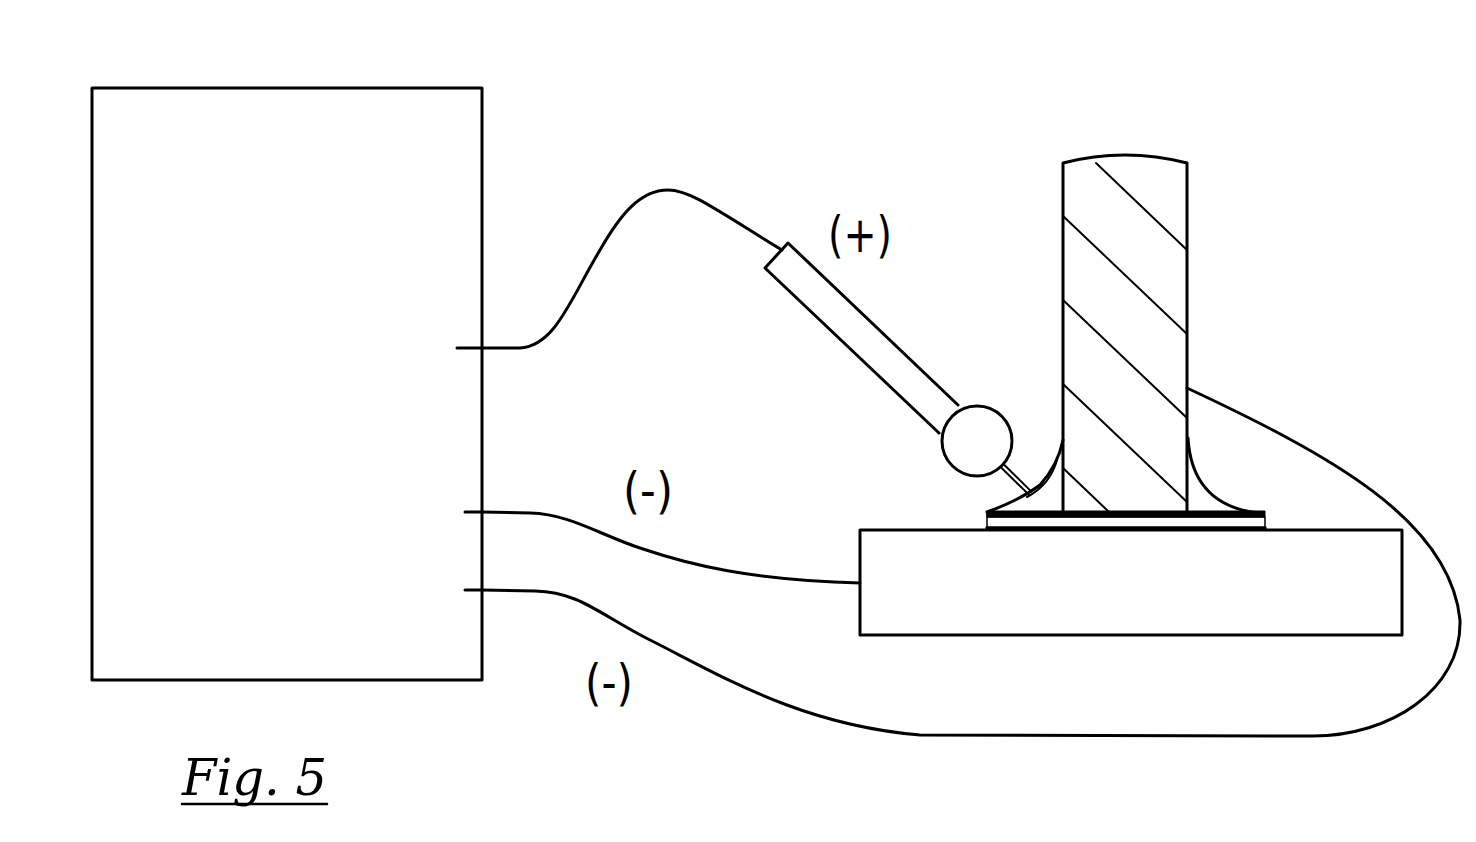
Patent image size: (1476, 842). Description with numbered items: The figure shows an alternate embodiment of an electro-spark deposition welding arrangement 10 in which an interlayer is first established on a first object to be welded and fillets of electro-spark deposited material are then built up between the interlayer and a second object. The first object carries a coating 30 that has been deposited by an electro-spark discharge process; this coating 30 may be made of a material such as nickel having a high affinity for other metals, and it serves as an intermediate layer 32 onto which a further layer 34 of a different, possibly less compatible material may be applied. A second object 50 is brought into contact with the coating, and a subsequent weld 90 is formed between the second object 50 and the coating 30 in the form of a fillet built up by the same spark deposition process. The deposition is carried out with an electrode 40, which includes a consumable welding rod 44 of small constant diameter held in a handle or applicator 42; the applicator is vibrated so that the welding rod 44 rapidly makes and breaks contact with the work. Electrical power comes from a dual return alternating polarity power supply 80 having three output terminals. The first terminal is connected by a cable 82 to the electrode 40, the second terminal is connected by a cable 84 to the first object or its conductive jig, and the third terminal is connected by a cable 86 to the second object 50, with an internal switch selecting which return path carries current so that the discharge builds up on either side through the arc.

The welding system 10 is at (1252, 94).
The coating 30 is at (1267, 520).
The intermediate layer 32 is at (1260, 511).
The further layer 34 is at (1198, 487).
The electrode 40 is at (857, 377).
The applicator 42 is at (880, 370).
The welding rod 44 is at (1013, 483).
The second object 50 is at (1128, 163).
The power supply 80 is at (355, 105).
The cable 82 is at (603, 250).
The cable 84 is at (565, 512).
The cable 86 is at (797, 710).
The weld 90 is at (1057, 463).